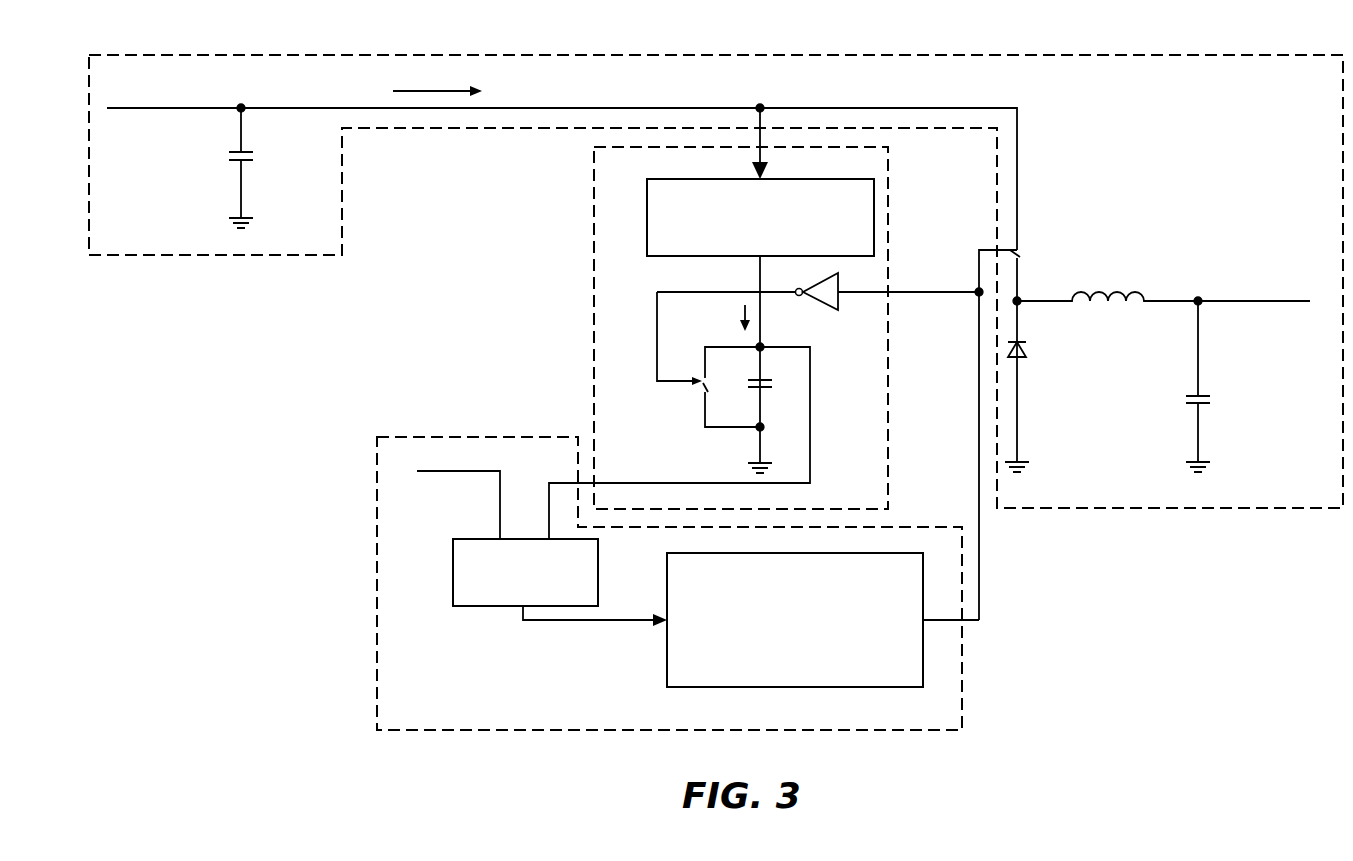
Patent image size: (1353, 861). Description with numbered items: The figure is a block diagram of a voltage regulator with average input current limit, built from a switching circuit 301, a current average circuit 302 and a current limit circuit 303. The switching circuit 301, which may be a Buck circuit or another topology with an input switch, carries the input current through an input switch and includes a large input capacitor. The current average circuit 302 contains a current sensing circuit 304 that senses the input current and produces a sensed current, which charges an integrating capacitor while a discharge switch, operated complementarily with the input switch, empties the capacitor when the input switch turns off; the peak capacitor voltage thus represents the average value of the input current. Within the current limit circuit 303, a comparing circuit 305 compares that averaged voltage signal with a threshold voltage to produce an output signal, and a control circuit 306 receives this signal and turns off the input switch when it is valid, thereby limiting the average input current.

The switching circuit 301 is at (131, 55).
The current average circuit 302 is at (739, 323).
The current limit circuit 303 is at (633, 583).
The current sensing circuit 304 is at (687, 256).
The comparing circuit 305 is at (454, 593).
The control circuit 306 is at (667, 655).